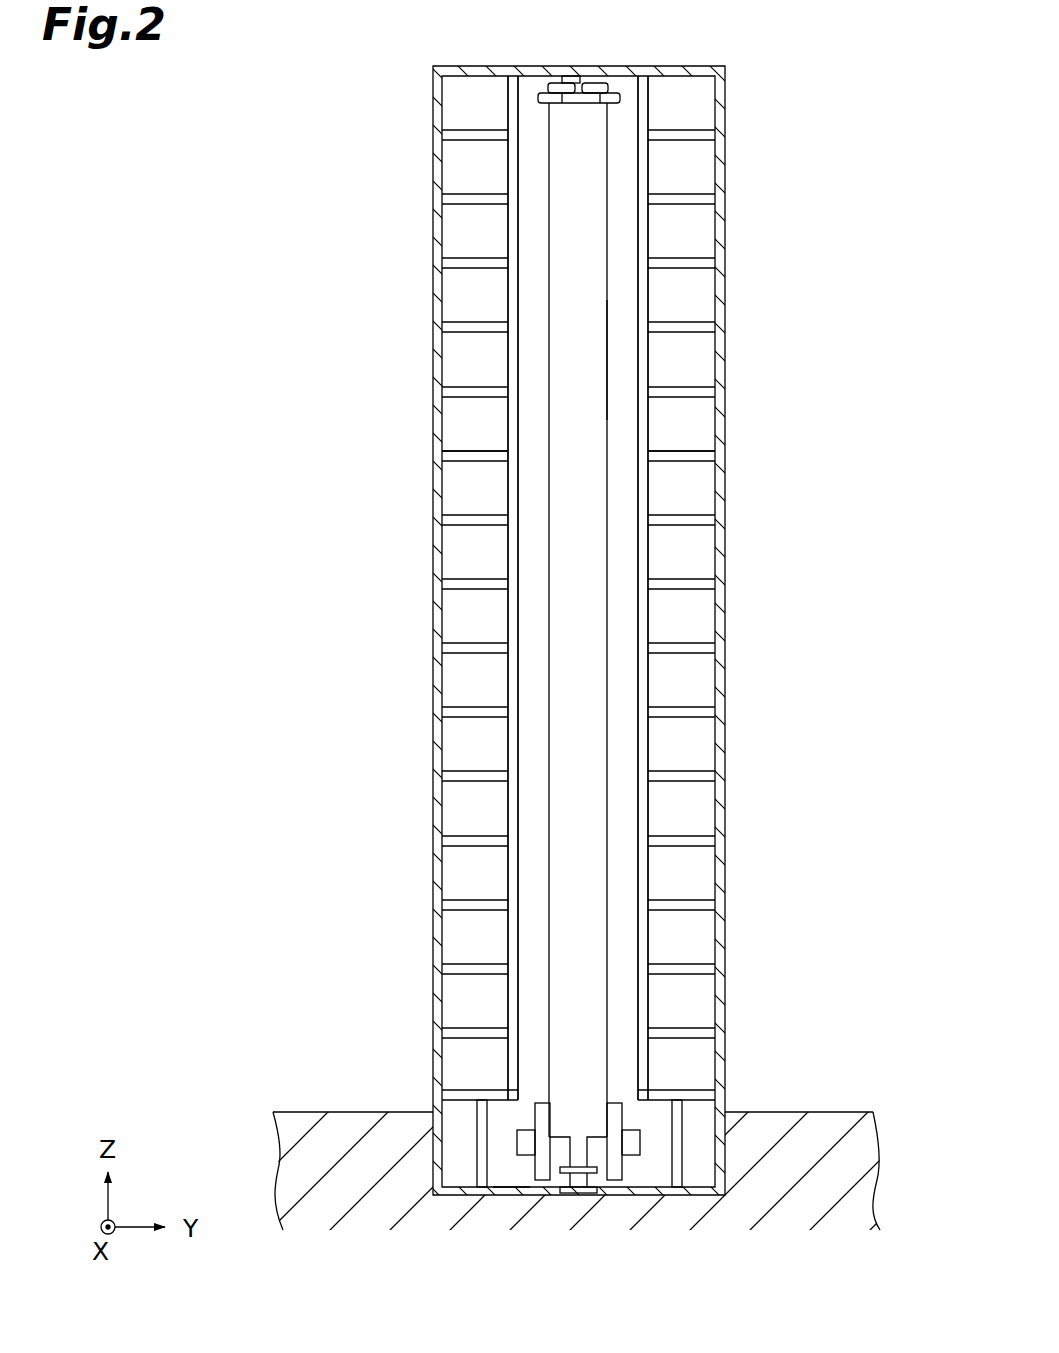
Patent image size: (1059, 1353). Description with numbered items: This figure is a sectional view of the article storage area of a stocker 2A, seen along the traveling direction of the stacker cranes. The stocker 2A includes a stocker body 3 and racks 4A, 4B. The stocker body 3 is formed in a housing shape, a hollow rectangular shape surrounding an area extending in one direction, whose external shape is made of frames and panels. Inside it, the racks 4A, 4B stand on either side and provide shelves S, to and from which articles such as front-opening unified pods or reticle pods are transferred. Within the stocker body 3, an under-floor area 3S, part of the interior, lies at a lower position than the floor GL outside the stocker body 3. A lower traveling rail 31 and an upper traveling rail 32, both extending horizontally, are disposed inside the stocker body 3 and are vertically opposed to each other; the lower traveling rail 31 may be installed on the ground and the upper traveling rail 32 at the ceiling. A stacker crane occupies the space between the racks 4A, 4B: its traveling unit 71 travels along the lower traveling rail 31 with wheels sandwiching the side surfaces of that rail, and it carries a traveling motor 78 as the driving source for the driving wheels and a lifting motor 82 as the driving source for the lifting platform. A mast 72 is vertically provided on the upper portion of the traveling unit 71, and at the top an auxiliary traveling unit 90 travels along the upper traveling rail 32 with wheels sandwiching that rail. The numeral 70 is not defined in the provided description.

The stocker 2A is at (462, 63).
The auxiliary traveling unit 90 is at (547, 62).
The upper traveling rail 32 is at (578, 76).
The stocker body 3 is at (433, 295).
The rail (70B) 70 is at (612, 297).
The mast 72 is at (592, 362).
The shelf S is at (473, 450).
The rack 4A is at (469, 503).
The rack 4B is at (691, 503).
The floor GL is at (316, 1112).
The under-floor area 3S is at (511, 1174).
The traveling motor 78 is at (517, 1140).
The traveling unit 71 is at (547, 1194).
The lifting motor 82 is at (633, 1155).
The lower traveling rail 31 is at (582, 1194).